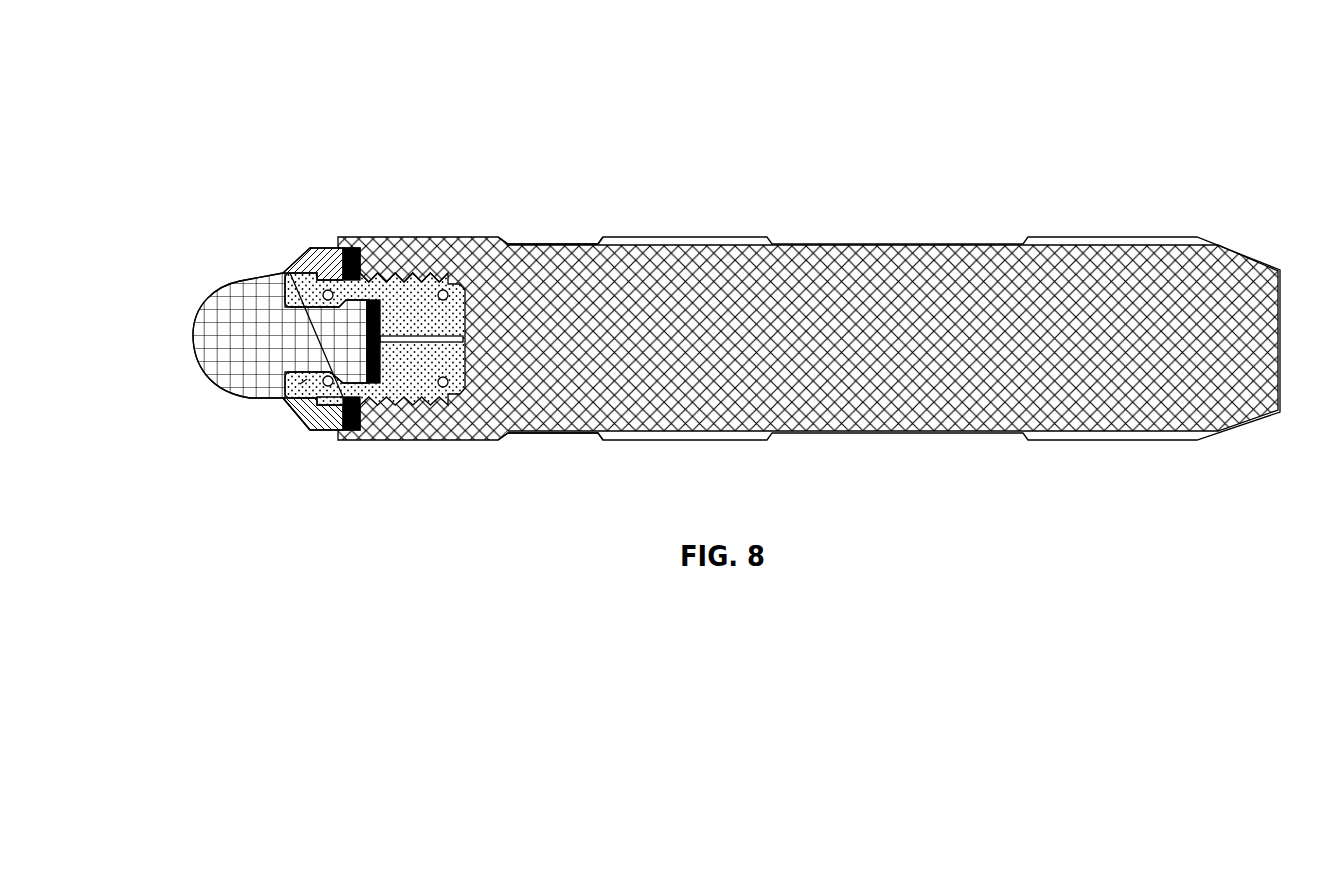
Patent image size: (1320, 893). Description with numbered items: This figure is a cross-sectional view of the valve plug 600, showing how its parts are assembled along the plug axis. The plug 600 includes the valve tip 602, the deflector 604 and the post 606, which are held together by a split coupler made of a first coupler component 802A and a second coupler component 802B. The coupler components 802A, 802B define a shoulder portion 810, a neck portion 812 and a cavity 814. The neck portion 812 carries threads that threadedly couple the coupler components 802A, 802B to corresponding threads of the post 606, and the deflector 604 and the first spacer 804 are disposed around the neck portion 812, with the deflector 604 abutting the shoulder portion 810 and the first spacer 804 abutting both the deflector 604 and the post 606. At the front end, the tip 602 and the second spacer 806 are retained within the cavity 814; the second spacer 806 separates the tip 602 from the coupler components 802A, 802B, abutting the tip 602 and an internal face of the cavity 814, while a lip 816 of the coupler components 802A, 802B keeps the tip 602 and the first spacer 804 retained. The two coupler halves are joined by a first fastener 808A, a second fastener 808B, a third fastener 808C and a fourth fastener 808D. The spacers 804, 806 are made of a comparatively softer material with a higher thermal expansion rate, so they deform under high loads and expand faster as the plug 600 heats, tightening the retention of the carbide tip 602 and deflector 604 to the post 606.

The plug 600 is at (1185, 79).
The valve tip 602 is at (237, 281).
The deflector 604 is at (293, 420).
The post 606 is at (985, 246).
The first coupler component 802A is at (412, 274).
The second coupler component 802B is at (377, 400).
The first spacer 804 is at (351, 247).
The second spacer 806 is at (412, 397).
The first fastener 808A is at (330, 274).
The second fastener 808B is at (448, 279).
The third fastener 808C is at (327, 405).
The fourth fastener 808D is at (455, 405).
The shoulder portion 810 is at (262, 397).
The neck portion 812 is at (503, 245).
The cavity 814 is at (312, 374).
The lip 816 is at (367, 301).